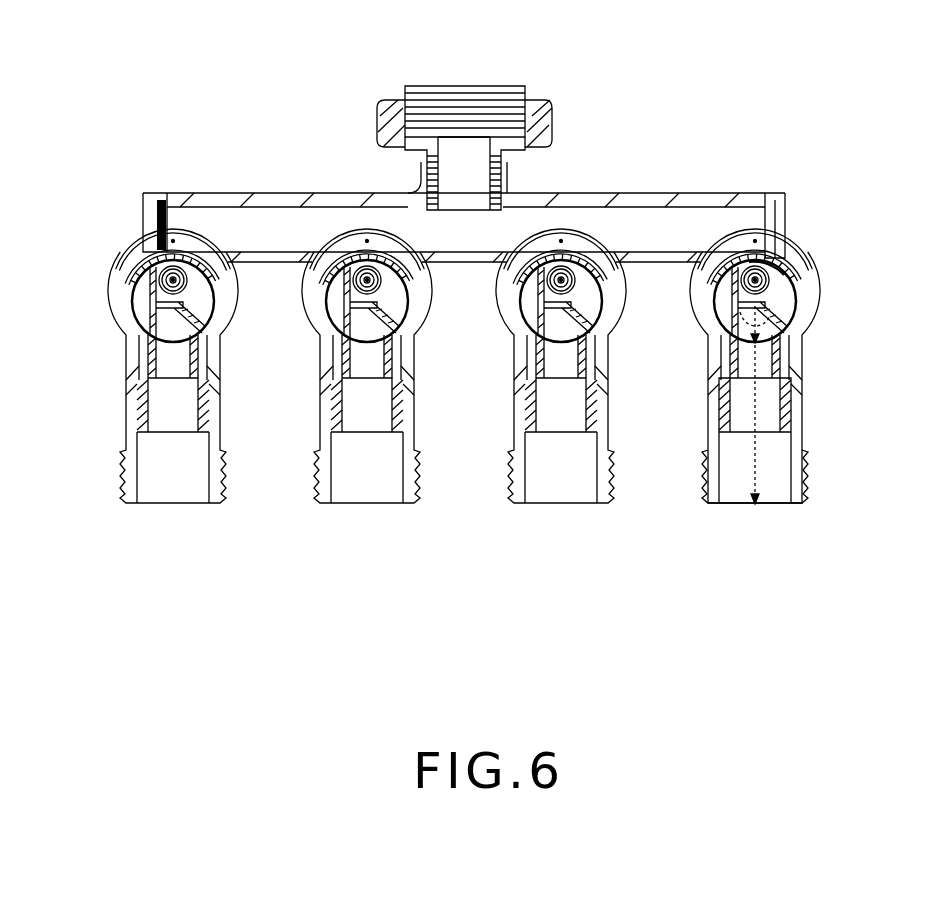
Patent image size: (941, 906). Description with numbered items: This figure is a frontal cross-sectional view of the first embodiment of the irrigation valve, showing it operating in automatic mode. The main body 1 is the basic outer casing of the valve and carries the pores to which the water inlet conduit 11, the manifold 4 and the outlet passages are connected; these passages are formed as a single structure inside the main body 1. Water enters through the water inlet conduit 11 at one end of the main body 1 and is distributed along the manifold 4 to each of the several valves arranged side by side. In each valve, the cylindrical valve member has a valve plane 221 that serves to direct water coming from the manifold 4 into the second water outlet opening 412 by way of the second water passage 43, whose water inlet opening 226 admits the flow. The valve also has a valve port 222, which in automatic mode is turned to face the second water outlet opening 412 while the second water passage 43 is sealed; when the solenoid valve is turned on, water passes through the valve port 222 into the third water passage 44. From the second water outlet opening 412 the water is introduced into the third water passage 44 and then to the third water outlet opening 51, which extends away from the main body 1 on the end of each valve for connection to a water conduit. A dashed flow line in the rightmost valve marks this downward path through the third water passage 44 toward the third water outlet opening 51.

The main body 1 is at (230, 151).
The water inlet conduit 11 is at (517, 92).
The manifold 4 is at (722, 196).
The valve plane 221 is at (728, 288).
The water inlet opening 226 is at (768, 300).
The second water passage 43 is at (714, 318).
The valve port 222 is at (787, 333).
The second water outlet opening 412 is at (787, 376).
The third water passage 44 is at (745, 447).
The third water outlet opening 51 is at (773, 512).